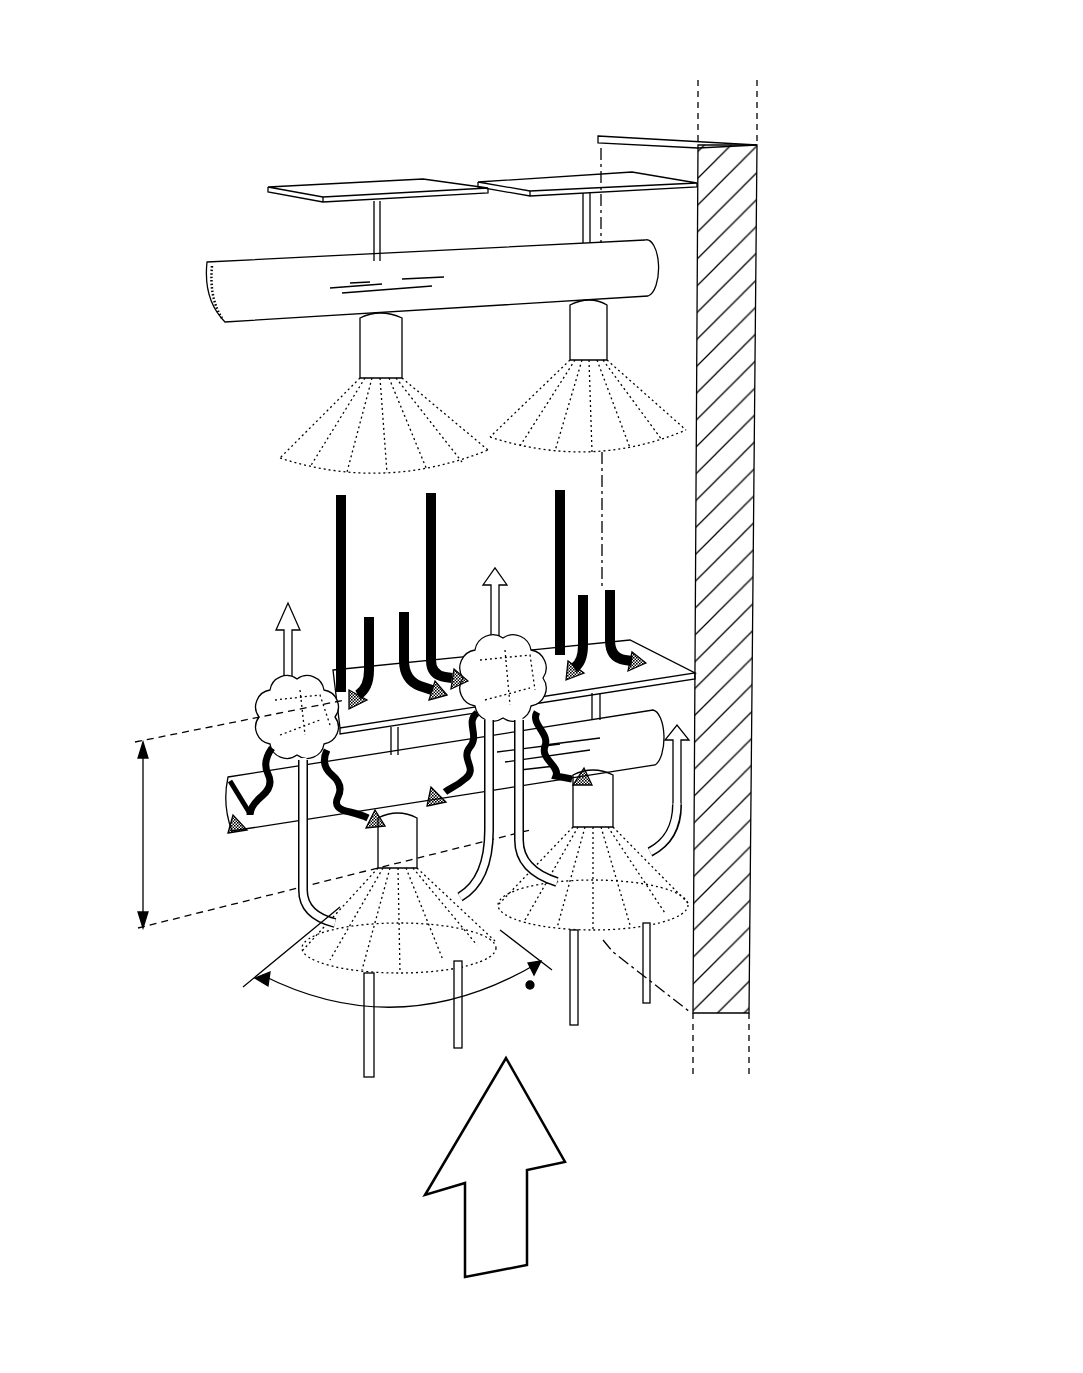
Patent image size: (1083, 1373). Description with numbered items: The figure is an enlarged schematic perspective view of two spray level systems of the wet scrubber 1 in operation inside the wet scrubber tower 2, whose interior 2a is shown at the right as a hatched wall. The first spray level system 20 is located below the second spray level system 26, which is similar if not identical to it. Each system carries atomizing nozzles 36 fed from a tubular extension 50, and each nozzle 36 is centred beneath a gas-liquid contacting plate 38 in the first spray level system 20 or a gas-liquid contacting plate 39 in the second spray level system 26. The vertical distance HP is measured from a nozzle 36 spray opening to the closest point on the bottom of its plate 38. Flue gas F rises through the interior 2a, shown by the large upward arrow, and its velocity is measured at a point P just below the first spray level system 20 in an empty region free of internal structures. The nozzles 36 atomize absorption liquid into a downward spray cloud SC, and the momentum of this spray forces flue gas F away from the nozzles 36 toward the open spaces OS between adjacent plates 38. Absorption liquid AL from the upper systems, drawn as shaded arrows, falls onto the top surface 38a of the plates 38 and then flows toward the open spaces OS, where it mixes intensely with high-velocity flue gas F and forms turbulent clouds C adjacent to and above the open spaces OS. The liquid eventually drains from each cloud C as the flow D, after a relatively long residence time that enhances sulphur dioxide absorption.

The wet scrubber 1 is at (806, 124).
The wet scrubber tower 2 is at (755, 429).
The interior 2a is at (672, 335).
The first spray level system 20 is at (812, 607).
The second spray level system 26 is at (766, 157).
The atomizing nozzle 36 is at (362, 342).
The gas-liquid contacting plate 38 is at (412, 653).
The top surface 38a is at (345, 660).
The gas-liquid contacting plate 39 is at (350, 190).
The tubular extension 50 is at (253, 318).
The absorption liquid AL is at (347, 543).
The cloud C is at (270, 690).
The open space OS is at (305, 723).
The flow D is at (228, 786).
The vertical distance HP is at (140, 833).
The spray cloud SC is at (323, 942).
The flue gas F is at (362, 1043).
The point P is at (530, 985).